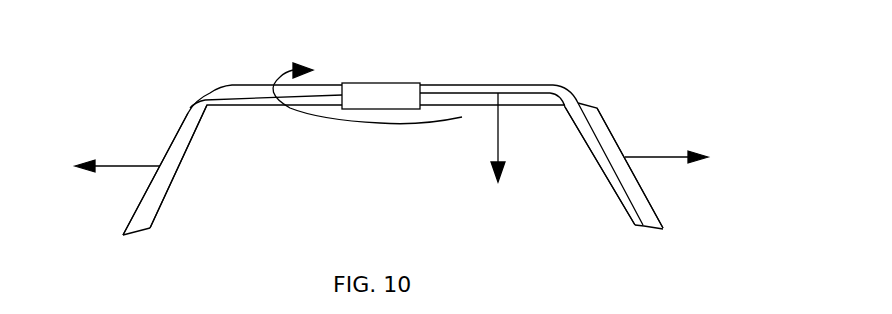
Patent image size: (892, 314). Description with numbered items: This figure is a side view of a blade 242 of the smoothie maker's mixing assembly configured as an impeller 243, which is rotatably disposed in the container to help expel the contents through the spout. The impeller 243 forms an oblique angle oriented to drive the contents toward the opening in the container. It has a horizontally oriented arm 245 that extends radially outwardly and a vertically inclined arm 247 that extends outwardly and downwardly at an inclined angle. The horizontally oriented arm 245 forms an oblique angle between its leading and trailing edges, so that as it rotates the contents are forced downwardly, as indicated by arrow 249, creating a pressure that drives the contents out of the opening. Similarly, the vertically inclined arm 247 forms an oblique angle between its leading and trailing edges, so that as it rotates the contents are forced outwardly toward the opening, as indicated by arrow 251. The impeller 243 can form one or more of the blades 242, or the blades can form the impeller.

The blade 242 is at (613, 132).
The impeller 243 is at (468, 85).
The horizontally oriented arm 245 is at (238, 108).
The vertically inclined arm 247 is at (597, 157).
The arrow 249 is at (497, 150).
The arrow 251 is at (662, 158).